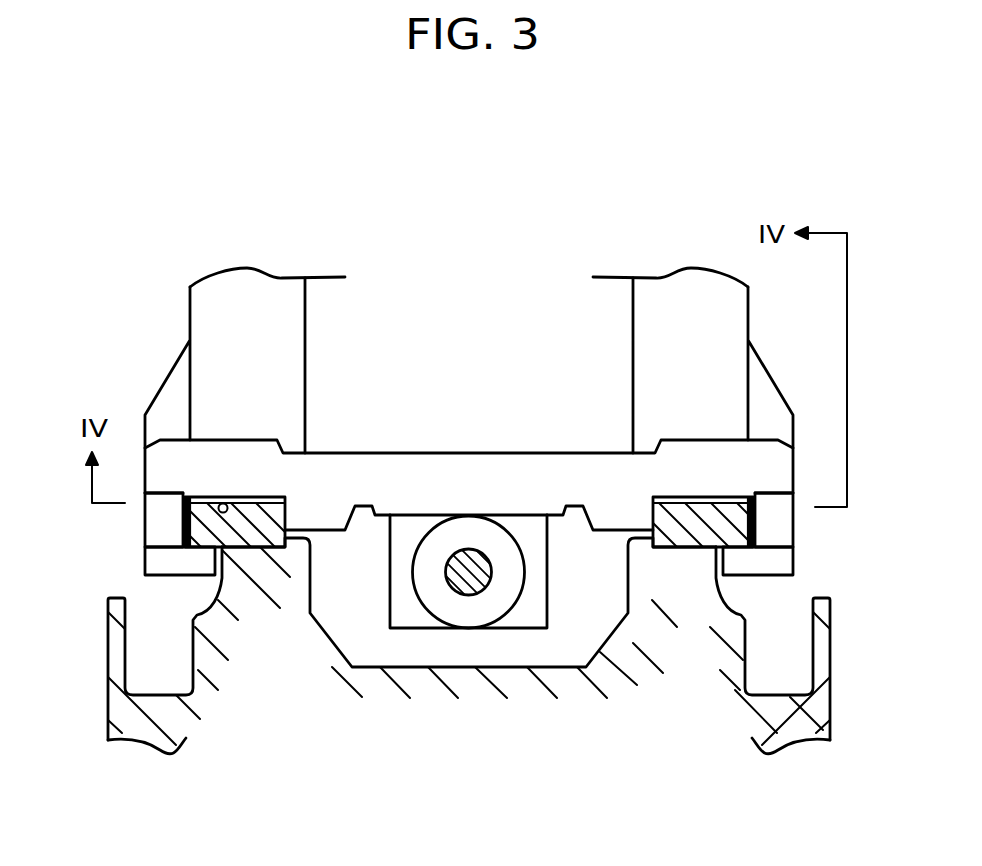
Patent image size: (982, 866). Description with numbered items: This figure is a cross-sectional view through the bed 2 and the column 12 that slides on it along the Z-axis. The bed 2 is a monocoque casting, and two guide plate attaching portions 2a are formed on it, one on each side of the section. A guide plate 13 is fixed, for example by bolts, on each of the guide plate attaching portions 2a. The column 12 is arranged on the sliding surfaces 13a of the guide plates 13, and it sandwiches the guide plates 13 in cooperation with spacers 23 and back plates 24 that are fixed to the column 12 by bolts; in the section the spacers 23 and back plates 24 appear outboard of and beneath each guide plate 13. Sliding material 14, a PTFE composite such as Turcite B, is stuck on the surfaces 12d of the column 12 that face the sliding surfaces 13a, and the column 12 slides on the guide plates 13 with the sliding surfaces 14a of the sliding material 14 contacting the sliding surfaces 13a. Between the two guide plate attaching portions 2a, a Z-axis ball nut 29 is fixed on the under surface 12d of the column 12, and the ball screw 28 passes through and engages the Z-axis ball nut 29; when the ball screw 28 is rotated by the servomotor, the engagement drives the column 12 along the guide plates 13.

The bed 2 is at (542, 707).
The guide plate attaching portions 2a is at (245, 562).
The column 12 is at (663, 285).
The surfaces of the column 12d is at (215, 495).
The guide plates 13 is at (288, 518).
The sliding surfaces of the guide plates 13a is at (262, 547).
The sliding material 14 is at (250, 500).
The sliding surfaces of the sliding material 14a is at (224, 504).
The spacers 23 is at (170, 526).
The back plates 24 is at (167, 563).
The ball screw 28 is at (462, 595).
The Z-axis ball nut 29 is at (530, 595).